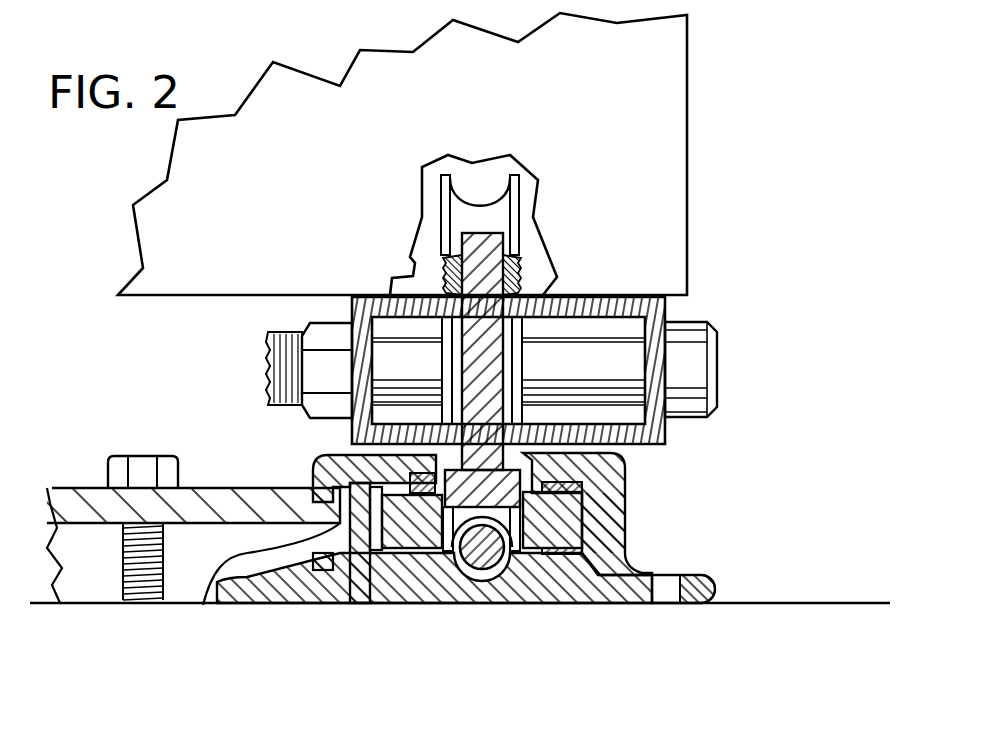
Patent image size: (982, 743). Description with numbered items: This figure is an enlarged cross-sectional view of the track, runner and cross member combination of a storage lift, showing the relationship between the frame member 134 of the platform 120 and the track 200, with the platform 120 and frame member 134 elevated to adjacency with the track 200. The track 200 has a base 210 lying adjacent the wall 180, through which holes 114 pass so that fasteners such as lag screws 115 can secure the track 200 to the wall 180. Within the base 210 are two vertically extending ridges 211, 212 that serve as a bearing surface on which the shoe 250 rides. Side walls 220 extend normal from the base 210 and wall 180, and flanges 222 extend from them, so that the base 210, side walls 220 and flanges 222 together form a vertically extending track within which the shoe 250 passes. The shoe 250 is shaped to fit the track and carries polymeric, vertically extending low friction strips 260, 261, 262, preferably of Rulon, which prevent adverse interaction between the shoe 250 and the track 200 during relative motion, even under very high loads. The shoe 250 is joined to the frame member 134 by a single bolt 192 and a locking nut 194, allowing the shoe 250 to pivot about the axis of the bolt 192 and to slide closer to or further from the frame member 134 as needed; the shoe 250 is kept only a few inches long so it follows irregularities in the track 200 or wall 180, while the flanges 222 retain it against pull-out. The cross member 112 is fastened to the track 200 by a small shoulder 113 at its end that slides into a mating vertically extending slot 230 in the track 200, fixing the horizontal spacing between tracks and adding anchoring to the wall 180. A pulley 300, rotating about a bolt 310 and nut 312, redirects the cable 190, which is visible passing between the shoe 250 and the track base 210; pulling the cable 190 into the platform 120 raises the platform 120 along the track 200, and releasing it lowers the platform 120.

The cross member 112 is at (104, 620).
The small shoulder 113 is at (335, 572).
The holes 114 is at (678, 605).
The lag screws 115 is at (130, 462).
The platform 120 is at (660, 206).
The frame member 134 is at (668, 318).
The wall 180 is at (775, 604).
The cable 190 is at (490, 562).
The bolt 192 is at (466, 238).
The locking nut 194 is at (508, 262).
The track 200 is at (645, 566).
The base 210 is at (706, 589).
The ridge 211 is at (605, 603).
The ridge 212 is at (430, 590).
The side walls 220 is at (628, 534).
The flanges 222 is at (620, 466).
The slot 230 is at (88, 588).
The shoe 250 is at (582, 518).
The strip 260 is at (400, 556).
The strip 261 is at (376, 548).
The strip 262 is at (312, 471).
The pulley 300 is at (516, 196).
The bolt 310 is at (702, 366).
The nut 312 is at (295, 403).